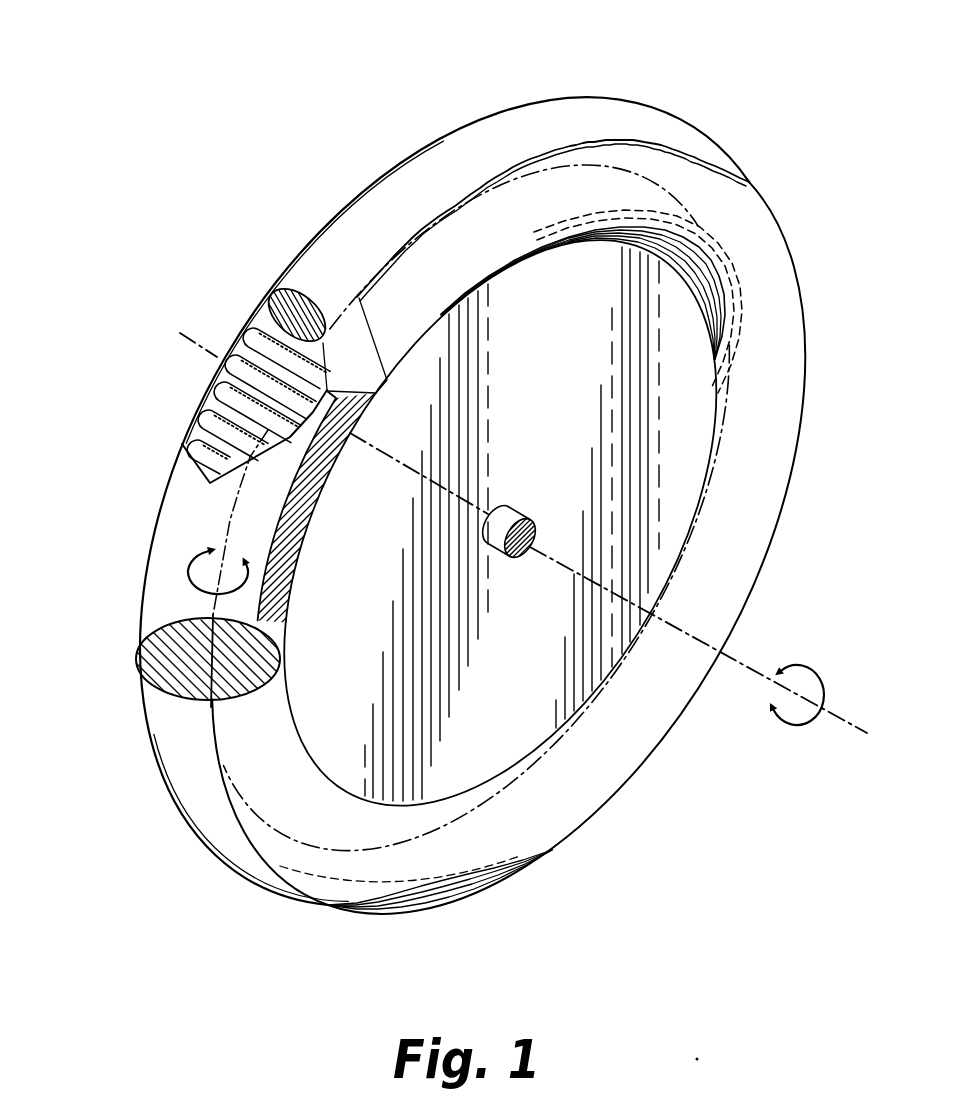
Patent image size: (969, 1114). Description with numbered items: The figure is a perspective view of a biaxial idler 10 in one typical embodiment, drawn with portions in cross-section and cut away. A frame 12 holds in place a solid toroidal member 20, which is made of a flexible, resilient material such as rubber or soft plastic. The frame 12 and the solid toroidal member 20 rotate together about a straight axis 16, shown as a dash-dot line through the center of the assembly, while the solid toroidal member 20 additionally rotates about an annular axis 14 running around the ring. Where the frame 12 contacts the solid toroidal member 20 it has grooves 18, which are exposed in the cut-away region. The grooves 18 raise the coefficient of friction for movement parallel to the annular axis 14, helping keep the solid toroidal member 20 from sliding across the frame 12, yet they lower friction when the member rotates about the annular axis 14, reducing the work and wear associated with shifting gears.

The biaxial idler 10 is at (243, 211).
The frame 12 is at (248, 323).
The annular axis 14 is at (232, 517).
The straight axis 16 is at (735, 662).
The grooves 18 is at (233, 408).
The solid toroidal member 20 is at (643, 117).